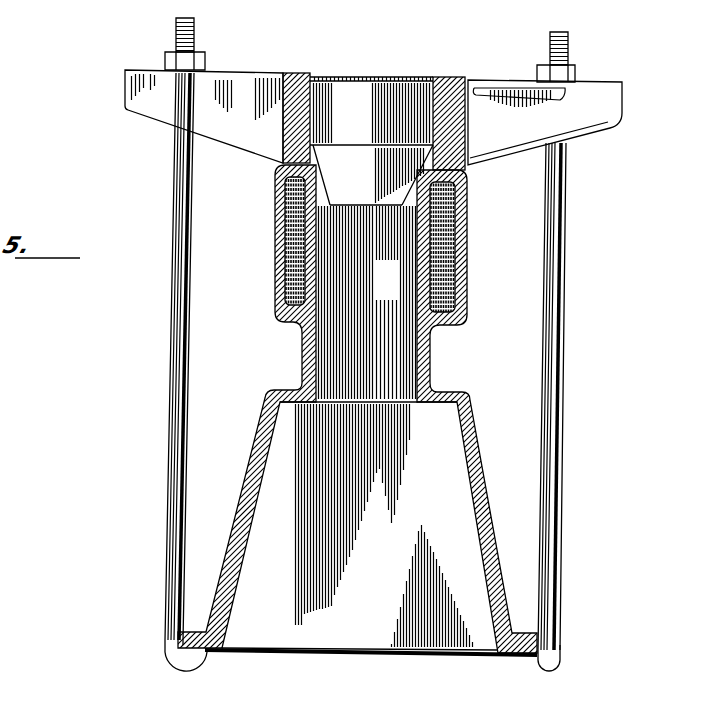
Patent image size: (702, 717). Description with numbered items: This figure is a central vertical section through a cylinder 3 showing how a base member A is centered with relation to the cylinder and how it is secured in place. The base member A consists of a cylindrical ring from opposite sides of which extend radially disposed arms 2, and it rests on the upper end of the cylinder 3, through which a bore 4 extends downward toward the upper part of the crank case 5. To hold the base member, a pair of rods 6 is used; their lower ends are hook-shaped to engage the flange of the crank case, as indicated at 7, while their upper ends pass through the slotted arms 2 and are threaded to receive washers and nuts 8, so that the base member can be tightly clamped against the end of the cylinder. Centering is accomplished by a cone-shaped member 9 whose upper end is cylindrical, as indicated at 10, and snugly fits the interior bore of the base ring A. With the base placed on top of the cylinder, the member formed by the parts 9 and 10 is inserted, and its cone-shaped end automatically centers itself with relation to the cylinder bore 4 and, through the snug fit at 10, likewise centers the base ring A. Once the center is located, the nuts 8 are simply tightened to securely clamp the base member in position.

The base member A is at (292, 77).
The arms 2 is at (152, 108).
The cylinder 3 is at (447, 218).
The bore 4 is at (408, 265).
The upper part of the crank case 5 is at (443, 443).
The rods 6 is at (175, 332).
The hook-shaped lower ends 7 is at (527, 655).
The washers and nuts 8 is at (575, 78).
The cone-shaped member 9 is at (348, 155).
The cylindrical upper end 10 is at (340, 95).